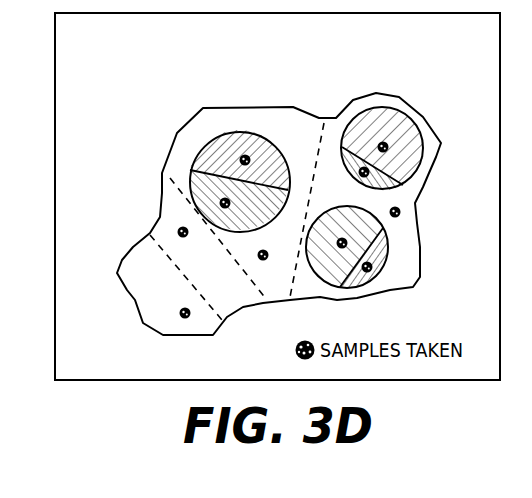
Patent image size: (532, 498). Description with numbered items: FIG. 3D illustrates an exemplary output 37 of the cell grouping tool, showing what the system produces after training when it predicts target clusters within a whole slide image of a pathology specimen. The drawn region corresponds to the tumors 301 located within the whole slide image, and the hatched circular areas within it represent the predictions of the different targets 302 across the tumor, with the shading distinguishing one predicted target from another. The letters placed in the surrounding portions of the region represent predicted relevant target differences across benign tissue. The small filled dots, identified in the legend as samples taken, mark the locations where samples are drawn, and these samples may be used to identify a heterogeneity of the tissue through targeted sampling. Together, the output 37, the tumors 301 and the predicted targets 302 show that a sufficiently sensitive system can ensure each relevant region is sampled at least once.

The output 37 is at (55, 40).
The tumors 301 is at (279, 214).
The targets 302 is at (229, 133).